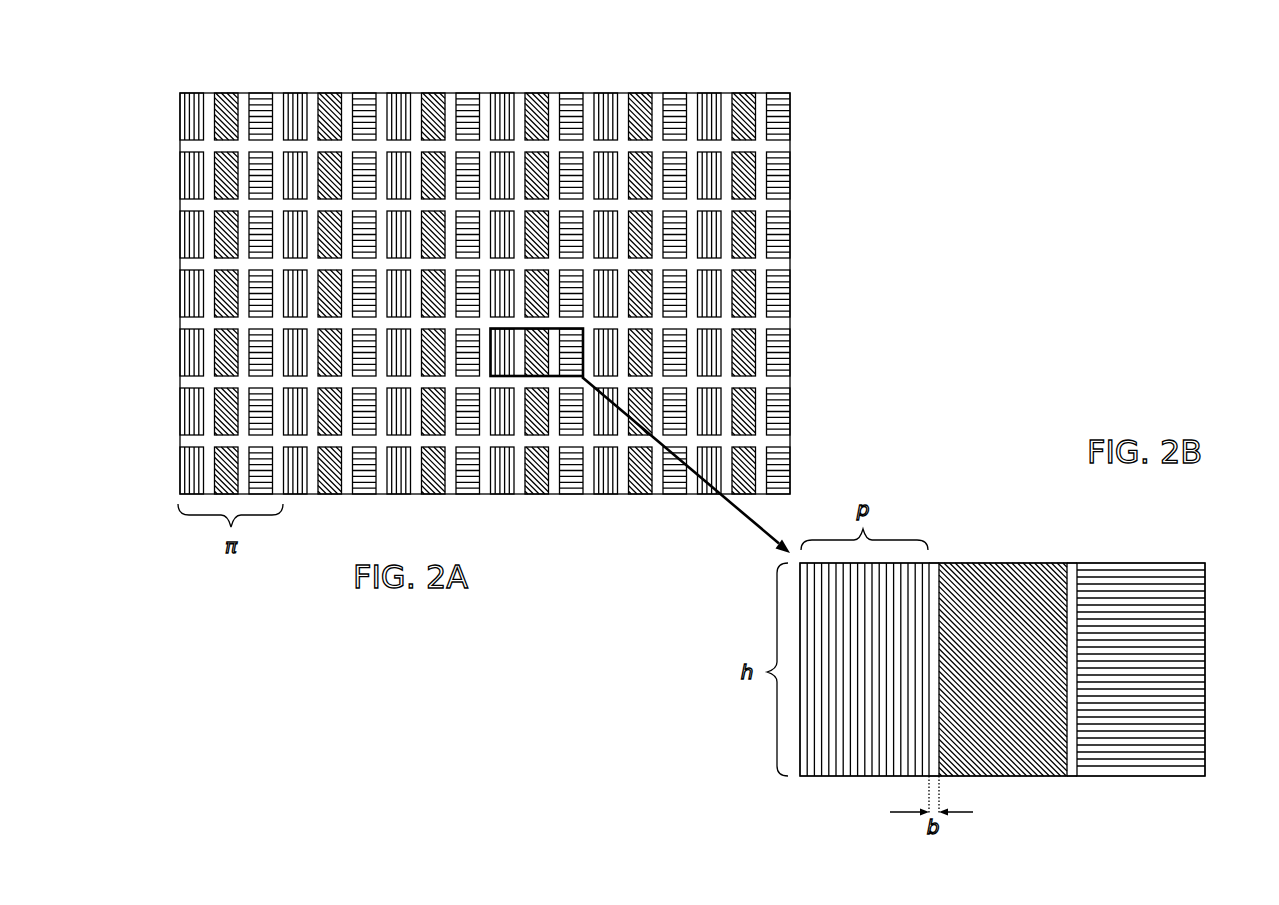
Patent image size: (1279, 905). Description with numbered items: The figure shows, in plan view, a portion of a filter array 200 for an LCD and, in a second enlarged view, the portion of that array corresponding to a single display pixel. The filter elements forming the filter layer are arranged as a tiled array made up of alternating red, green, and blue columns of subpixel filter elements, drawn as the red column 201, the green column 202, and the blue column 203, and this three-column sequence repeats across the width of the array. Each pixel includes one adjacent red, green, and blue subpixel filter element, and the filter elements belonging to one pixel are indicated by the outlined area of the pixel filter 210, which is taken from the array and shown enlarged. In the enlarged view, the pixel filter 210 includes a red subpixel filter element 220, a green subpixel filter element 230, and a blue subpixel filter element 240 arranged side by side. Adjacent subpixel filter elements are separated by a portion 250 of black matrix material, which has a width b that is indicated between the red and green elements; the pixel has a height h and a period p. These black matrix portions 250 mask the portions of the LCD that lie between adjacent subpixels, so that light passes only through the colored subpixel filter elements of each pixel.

In FIG. 2A, the filter array 200 is at (139, 498).
In FIG. 2A, the red subpixel filter column 201 is at (192, 92).
In FIG. 2A, the green subpixel filter column 202 is at (227, 92).
In FIG. 2A, the blue subpixel filter column 203 is at (261, 92).
In FIG. 2A, the pixel filter 210 is at (547, 377).
In FIG. 2B, the pixel filter 210 is at (737, 770).
In FIG. 2B, the red subpixel filter element 220 is at (845, 776).
In FIG. 2B, the green subpixel filter element 230 is at (1010, 778).
In FIG. 2B, the blue subpixel filter element 240 is at (1135, 778).
In FIG. 2B, the black matrix portion 250 is at (935, 562).